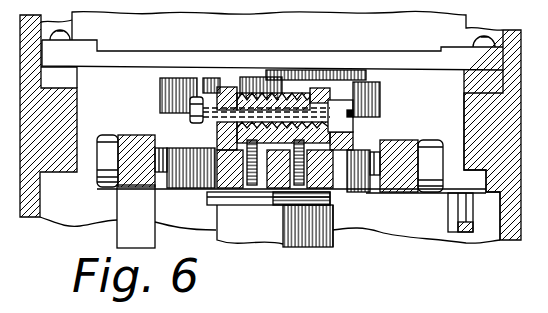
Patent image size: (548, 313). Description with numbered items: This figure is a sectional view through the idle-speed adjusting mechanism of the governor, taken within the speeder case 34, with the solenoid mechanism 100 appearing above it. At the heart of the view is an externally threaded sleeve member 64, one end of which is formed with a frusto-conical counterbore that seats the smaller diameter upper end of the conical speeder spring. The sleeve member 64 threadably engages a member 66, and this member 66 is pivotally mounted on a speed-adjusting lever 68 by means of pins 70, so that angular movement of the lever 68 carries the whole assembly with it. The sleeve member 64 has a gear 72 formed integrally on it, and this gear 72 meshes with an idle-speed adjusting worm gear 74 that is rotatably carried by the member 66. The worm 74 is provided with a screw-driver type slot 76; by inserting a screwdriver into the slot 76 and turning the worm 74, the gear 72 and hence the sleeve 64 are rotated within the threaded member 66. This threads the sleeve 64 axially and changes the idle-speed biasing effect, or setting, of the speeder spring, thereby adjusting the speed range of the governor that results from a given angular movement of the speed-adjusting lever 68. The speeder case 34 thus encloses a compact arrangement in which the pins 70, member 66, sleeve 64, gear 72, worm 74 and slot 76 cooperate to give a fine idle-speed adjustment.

The speeder case 34 is at (50, 212).
The solenoid mechanism 100 is at (160, 45).
The sleeve member 64 is at (310, 222).
The member 66 is at (196, 188).
The speed-adjusting lever 68 is at (128, 186).
The pins 70 is at (110, 173).
The gear 72 is at (203, 83).
The idle-speed adjusting worm gear 74 is at (256, 87).
The screw-driver type slot 76 is at (353, 113).